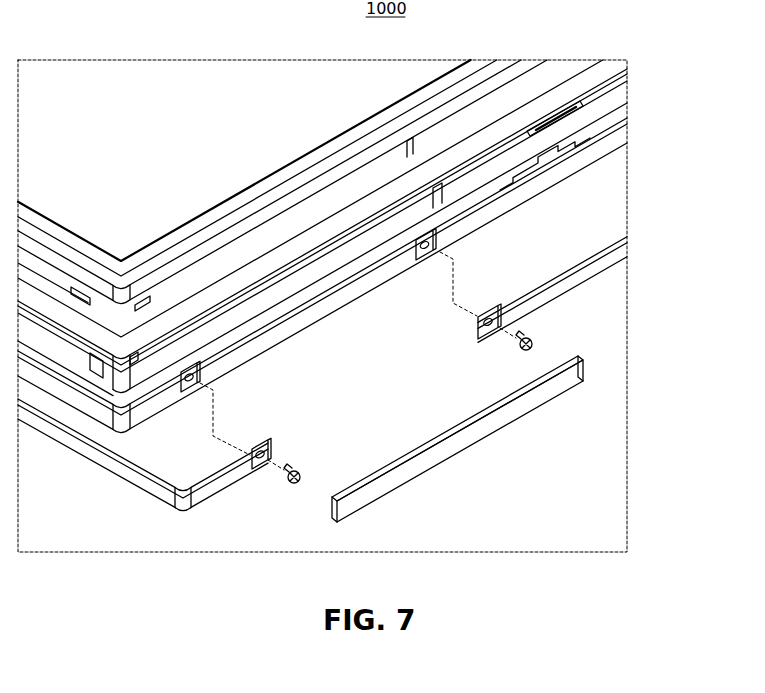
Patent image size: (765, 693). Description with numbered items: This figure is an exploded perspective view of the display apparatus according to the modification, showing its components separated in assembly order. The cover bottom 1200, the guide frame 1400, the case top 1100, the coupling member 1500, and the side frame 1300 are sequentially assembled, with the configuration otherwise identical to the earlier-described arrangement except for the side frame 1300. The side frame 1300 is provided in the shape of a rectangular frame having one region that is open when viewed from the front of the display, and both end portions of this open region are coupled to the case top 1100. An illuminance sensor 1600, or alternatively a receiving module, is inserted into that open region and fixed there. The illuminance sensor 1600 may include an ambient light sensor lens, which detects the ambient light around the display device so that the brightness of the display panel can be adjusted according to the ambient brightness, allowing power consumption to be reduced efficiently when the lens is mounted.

The case top 1100 is at (573, 70).
The cover bottom 1200 is at (607, 140).
The side frame 1300 is at (613, 252).
The guide frame 1400 is at (607, 90).
The coupling member 1500 is at (535, 347).
The illuminance sensor 1600 is at (578, 376).